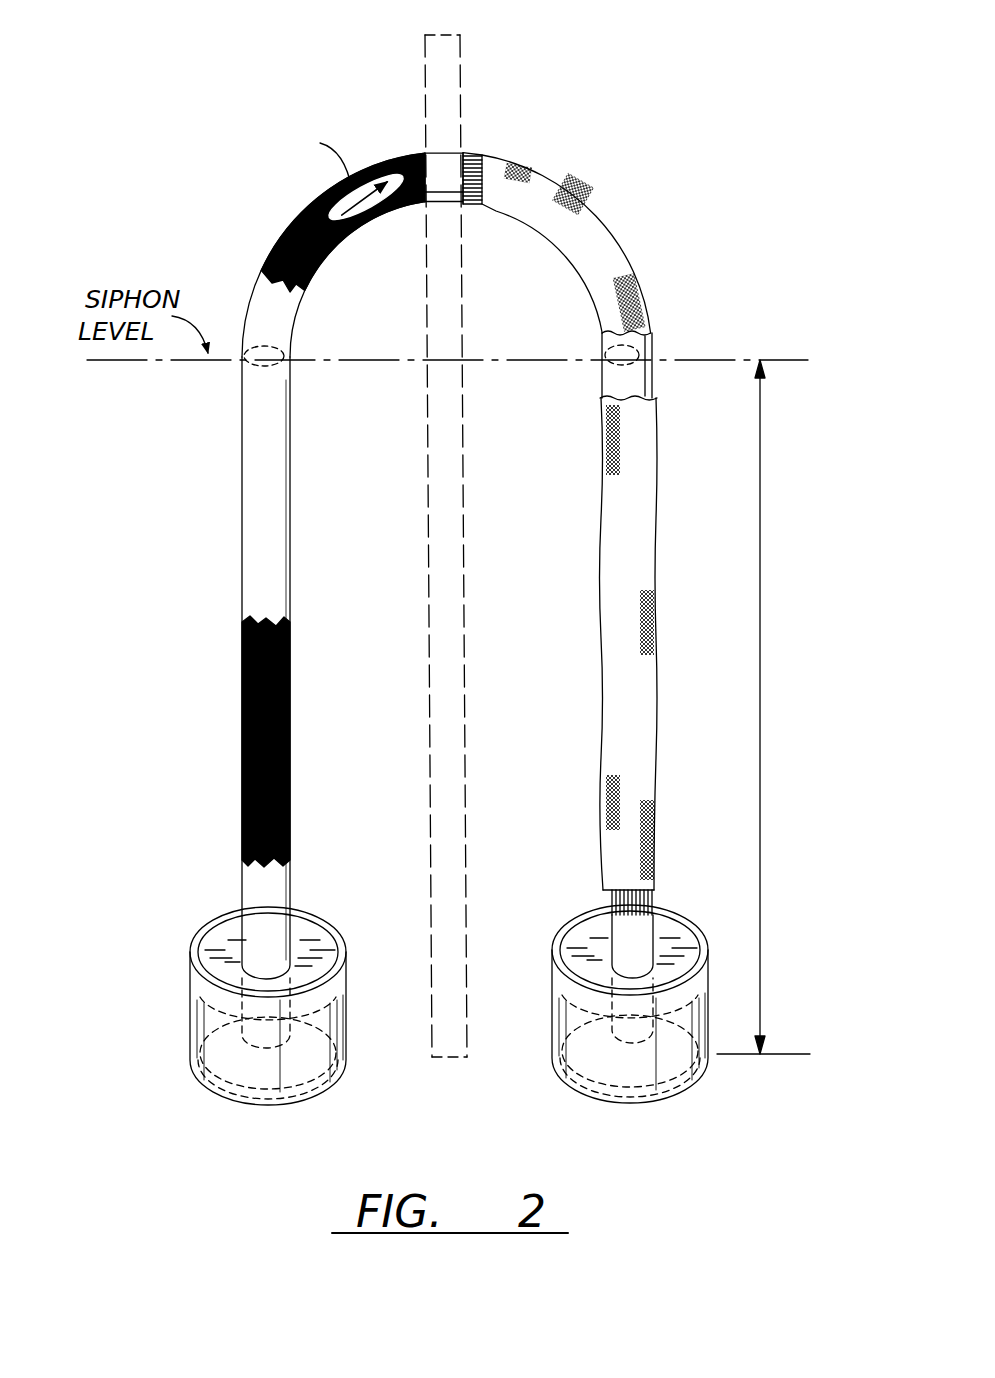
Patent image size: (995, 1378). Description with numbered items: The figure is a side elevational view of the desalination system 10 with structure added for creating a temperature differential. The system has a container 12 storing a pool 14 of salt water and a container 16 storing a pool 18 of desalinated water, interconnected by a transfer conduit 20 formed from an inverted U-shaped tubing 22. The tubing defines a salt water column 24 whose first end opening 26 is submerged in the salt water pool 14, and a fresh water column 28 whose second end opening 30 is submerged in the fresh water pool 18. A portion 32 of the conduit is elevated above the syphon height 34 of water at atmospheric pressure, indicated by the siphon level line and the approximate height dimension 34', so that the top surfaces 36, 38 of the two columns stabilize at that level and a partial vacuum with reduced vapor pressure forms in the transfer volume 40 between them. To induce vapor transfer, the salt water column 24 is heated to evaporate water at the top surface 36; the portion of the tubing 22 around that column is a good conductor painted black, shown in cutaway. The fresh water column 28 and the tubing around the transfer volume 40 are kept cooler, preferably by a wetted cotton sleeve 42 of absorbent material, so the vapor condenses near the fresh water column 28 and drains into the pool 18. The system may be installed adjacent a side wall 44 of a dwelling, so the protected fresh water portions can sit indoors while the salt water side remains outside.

The desalination system 10 is at (602, 124).
The container 12 is at (196, 1000).
The pool of salt water 14 is at (318, 948).
The container 16 is at (556, 998).
The pool of desalinated water 18 is at (675, 946).
The transfer conduit 20 is at (218, 549).
The inverted U-shaped tubing 22 is at (336, 238).
The salt water column 24 is at (273, 508).
The first end opening 26 is at (205, 1080).
The fresh water column 28 is at (637, 382).
The second end opening 30 is at (628, 1045).
The portion 32 is at (392, 136).
The syphon height 34 is at (457, 334).
The height dimension 34' is at (776, 707).
The top surface 36 is at (280, 345).
The top surface 38 is at (603, 340).
The transfer volume 40 is at (455, 160).
The cotton sleeve 42 is at (645, 586).
The side wall 44 is at (450, 58).